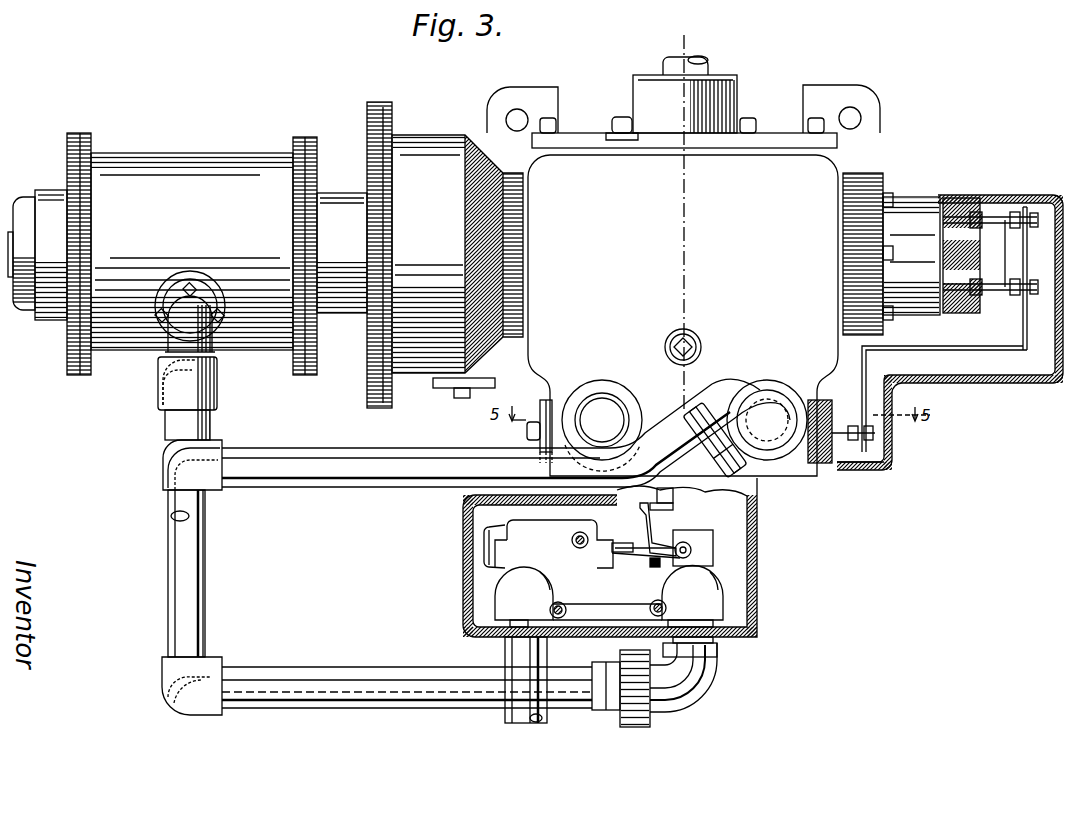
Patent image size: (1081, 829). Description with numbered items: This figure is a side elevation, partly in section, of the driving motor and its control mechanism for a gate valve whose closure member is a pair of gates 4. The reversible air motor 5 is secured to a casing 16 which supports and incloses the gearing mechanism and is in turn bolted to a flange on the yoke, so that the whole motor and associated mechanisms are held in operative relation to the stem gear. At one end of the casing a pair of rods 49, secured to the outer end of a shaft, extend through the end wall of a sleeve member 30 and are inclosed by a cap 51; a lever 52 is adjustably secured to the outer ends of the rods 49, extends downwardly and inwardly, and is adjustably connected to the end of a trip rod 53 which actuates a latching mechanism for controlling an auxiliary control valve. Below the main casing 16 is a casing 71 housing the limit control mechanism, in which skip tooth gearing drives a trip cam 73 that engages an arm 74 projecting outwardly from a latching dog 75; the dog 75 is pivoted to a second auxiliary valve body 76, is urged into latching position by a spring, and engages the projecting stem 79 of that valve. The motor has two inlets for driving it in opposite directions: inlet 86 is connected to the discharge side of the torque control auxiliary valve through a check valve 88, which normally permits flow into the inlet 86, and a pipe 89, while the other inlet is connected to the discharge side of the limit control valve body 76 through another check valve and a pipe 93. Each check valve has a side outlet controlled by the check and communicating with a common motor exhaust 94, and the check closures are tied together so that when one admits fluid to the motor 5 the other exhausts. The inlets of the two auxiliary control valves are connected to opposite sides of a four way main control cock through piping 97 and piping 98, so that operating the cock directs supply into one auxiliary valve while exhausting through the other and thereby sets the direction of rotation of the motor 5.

The gates 4 is at (686, 40).
The motor 5 is at (160, 155).
The casing 16 is at (425, 150).
The sleeve member 30 is at (918, 197).
The rods 49 is at (998, 213).
The cap 51 is at (1063, 215).
The lever 52 is at (868, 396).
The trip rod 53 is at (872, 470).
The casing 71 is at (757, 577).
The trip cam 73 is at (676, 506).
The arm 74 is at (690, 524).
The latching dog 75 is at (645, 556).
The auxiliary valve body 76 is at (778, 600).
The stem 79 is at (628, 546).
The inlet 86 is at (153, 352).
The check valve 88 is at (219, 402).
The pipe 89 is at (766, 392).
The pipe 93 is at (208, 620).
The motor exhaust 94 is at (170, 499).
The piping 97 is at (611, 390).
The piping 98 is at (547, 715).